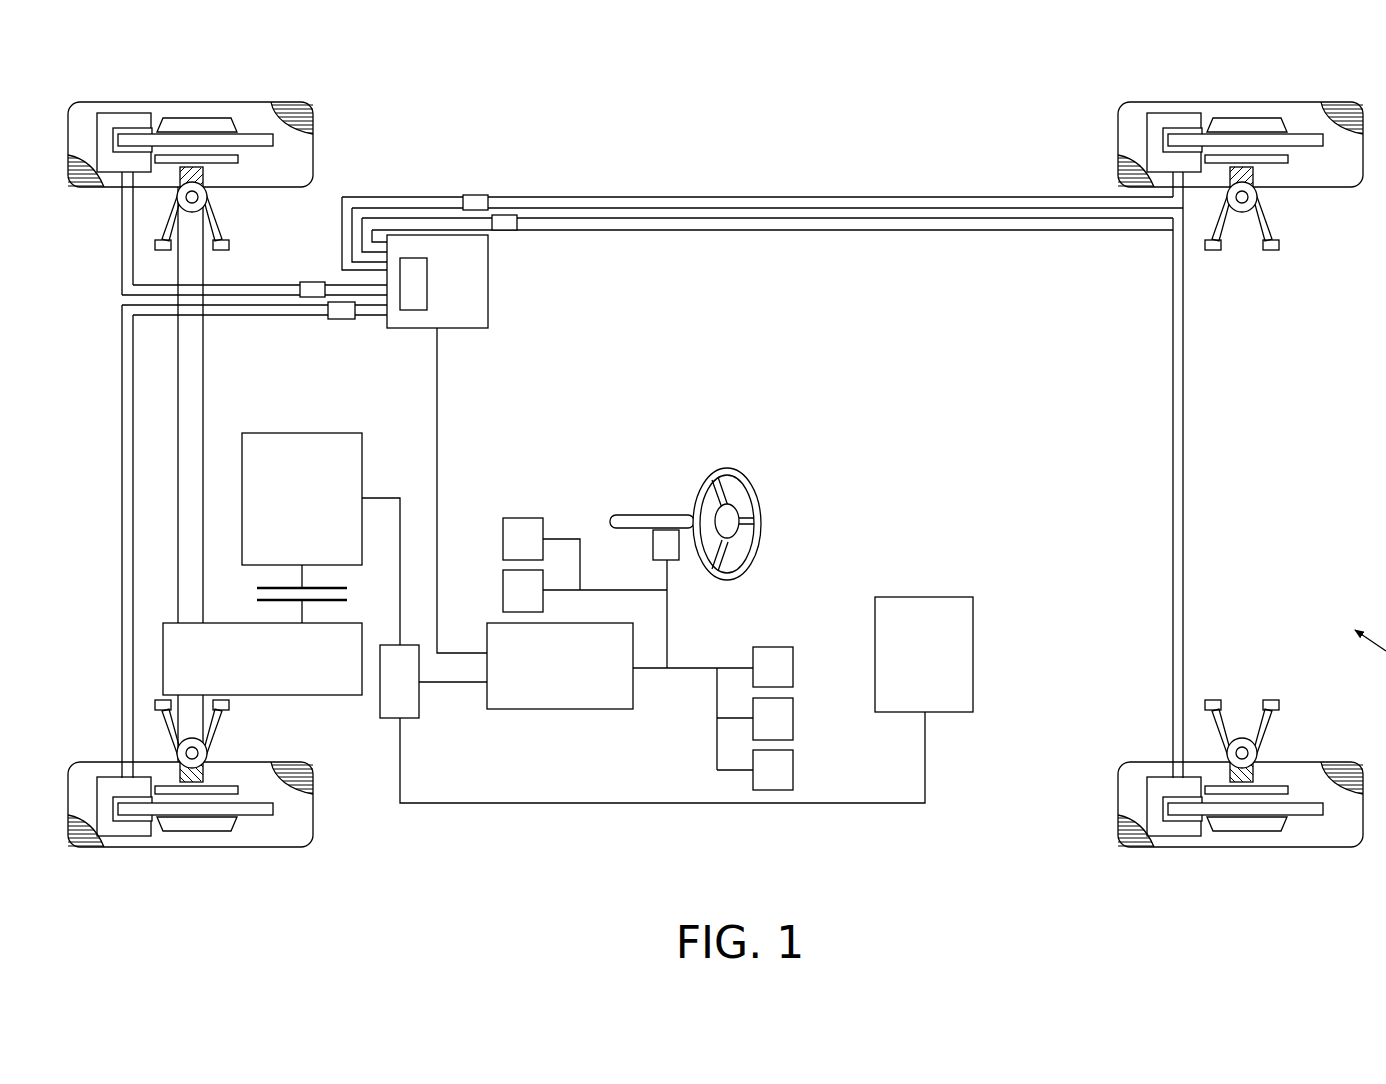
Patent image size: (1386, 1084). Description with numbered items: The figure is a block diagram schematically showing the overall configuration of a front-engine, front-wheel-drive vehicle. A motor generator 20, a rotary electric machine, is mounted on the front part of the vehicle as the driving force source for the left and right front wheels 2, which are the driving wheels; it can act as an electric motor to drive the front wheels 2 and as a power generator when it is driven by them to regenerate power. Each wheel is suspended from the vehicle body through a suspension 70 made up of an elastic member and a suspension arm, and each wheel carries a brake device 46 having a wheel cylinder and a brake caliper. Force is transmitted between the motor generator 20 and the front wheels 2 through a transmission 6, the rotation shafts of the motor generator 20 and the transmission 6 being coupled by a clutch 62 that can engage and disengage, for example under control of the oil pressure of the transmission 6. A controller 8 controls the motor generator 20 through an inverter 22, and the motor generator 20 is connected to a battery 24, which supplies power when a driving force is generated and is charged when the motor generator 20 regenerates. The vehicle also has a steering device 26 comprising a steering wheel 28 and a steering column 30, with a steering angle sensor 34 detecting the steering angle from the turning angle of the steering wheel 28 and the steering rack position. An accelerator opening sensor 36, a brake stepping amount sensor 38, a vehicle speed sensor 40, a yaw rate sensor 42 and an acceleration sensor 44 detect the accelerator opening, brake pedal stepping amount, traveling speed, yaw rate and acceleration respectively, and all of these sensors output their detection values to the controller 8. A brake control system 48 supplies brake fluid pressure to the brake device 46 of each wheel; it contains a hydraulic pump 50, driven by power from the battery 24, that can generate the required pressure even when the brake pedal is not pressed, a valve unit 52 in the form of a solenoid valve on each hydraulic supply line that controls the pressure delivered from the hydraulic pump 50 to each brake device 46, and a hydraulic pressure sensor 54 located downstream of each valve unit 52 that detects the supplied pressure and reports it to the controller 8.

The front wheels 2 is at (265, 102).
The transmission 6 is at (343, 697).
The controller 8 is at (615, 711).
The motor generator 20 is at (302, 433).
The inverter 22 is at (420, 710).
The battery 24 is at (968, 597).
The steering device 26 is at (760, 500).
The steering wheel 28 is at (727, 468).
The steering column 30 is at (635, 515).
The steering angle sensor 34 is at (653, 545).
The accelerator opening sensor 36 is at (503, 540).
The brake stepping amount sensor 38 is at (503, 595).
The vehicle speed sensor 40 is at (786, 647).
The yaw rate sensor 42 is at (794, 718).
The acceleration sensor 44 is at (794, 768).
The brake device 46 is at (128, 113).
The brake control system 48 is at (482, 330).
The hydraulic pump 50 is at (420, 310).
The valve unit 52 is at (477, 195).
The hydraulic pressure sensor 54 is at (520, 160).
The clutch 62 is at (350, 598).
The suspension 70 is at (239, 226).